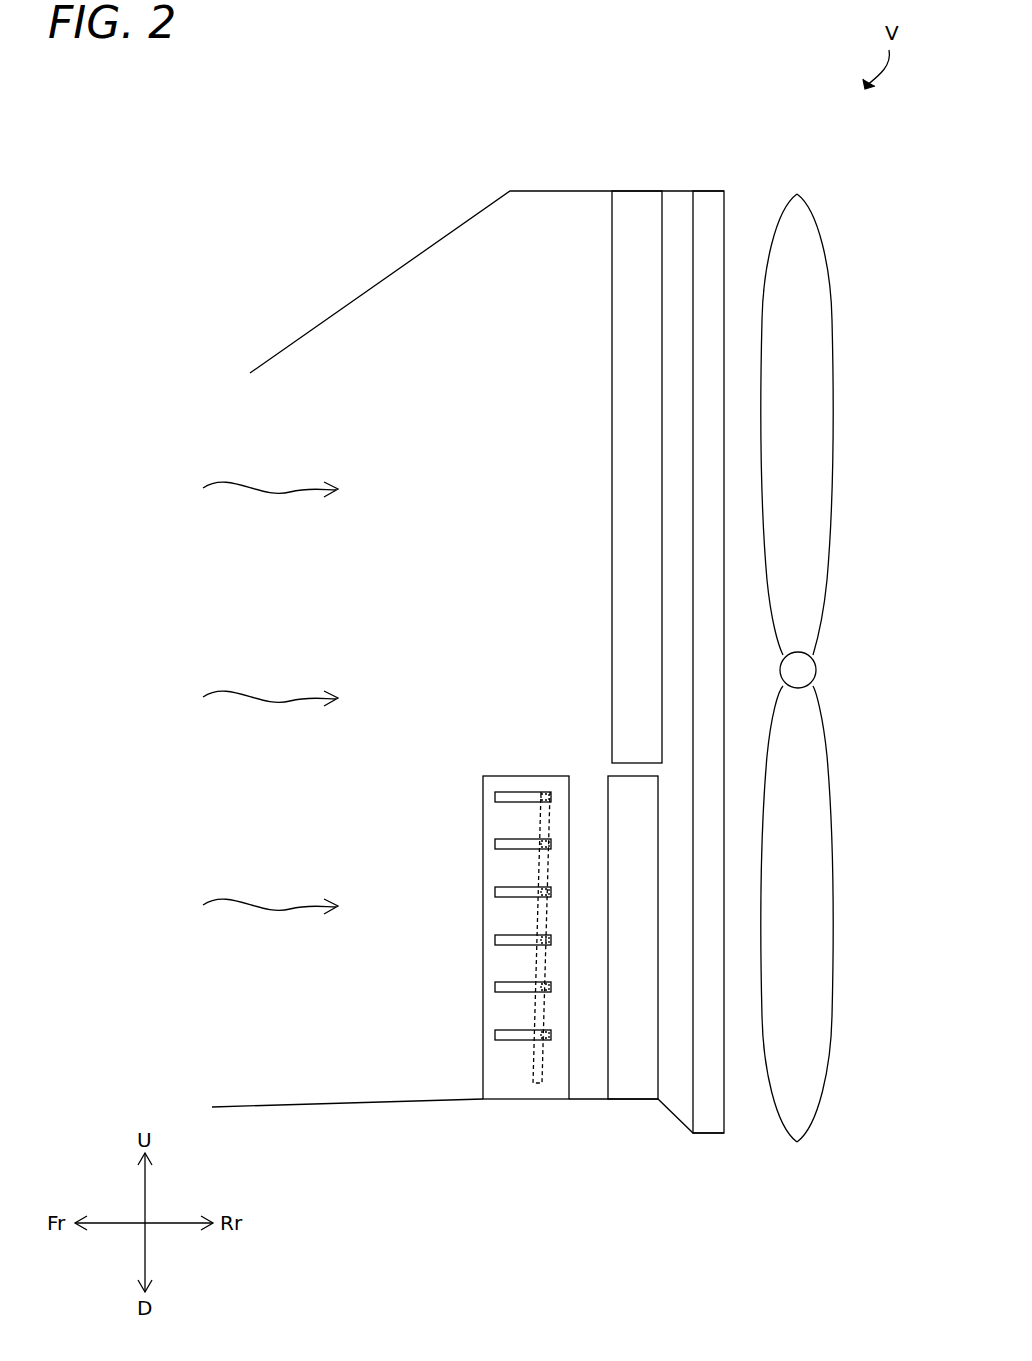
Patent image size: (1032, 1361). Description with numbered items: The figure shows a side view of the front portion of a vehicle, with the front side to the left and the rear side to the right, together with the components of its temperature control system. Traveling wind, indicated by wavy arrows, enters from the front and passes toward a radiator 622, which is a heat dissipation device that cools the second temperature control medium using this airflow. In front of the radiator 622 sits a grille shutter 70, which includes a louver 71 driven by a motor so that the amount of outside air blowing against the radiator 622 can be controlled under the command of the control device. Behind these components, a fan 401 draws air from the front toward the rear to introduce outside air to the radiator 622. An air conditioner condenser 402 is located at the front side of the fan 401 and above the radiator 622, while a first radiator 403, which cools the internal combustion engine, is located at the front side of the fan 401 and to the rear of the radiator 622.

The fan 401 is at (797, 1107).
The air conditioner condenser 402 is at (644, 214).
The first radiator 403 is at (708, 214).
The radiator 622 is at (630, 1065).
The grille shutter 70 is at (547, 776).
The louver 71 is at (495, 797).